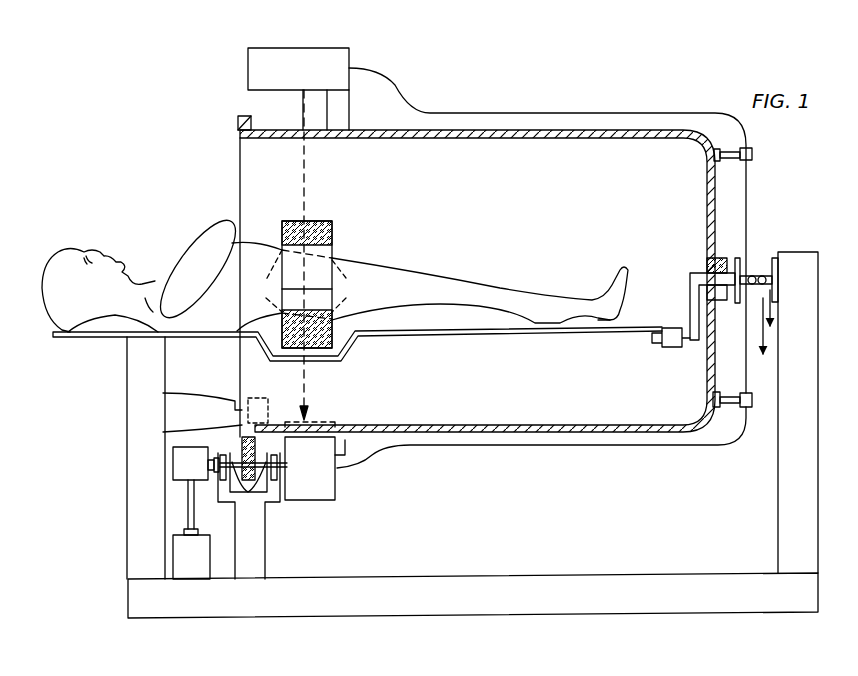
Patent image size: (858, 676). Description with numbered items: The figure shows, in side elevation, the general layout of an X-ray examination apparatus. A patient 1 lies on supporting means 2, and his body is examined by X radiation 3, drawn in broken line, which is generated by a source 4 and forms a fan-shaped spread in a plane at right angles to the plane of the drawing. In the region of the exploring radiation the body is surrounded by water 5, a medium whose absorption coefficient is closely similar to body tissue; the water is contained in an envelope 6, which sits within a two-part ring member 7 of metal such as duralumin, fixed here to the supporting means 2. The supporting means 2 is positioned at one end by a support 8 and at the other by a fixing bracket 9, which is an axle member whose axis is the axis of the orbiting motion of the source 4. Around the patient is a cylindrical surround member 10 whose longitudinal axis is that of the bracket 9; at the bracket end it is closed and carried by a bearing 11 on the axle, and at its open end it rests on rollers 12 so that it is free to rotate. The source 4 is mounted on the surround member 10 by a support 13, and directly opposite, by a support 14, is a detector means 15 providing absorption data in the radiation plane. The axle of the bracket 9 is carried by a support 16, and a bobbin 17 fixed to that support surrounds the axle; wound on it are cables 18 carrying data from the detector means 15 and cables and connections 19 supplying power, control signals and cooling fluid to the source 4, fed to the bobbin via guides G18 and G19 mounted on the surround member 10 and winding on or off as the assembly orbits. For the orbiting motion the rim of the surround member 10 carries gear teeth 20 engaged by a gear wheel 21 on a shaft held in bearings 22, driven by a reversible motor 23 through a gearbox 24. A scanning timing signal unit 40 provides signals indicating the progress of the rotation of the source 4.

The patient 1 is at (170, 262).
The supporting means 2 is at (92, 340).
The X radiation 3 is at (300, 119).
The source 4 is at (248, 71).
The water 5 is at (334, 280).
The envelope 6 is at (269, 281).
The ring member 7 is at (336, 319).
The support 8 is at (127, 516).
The fixing bracket 9 is at (699, 271).
The surround member 10 is at (472, 139).
The bearing 11 is at (720, 258).
The rollers 12 is at (258, 398).
The support 13 is at (335, 110).
The support 14 is at (340, 466).
The detector means 15 is at (320, 498).
The support 16 is at (780, 488).
The bobbin 17 is at (746, 275).
The cables 18 is at (497, 448).
The cables and connections 19 is at (578, 113).
The gear teeth 20 is at (238, 124).
The gear wheel 21 is at (287, 465).
The bearings 22 is at (268, 494).
The reversible motor 23 is at (180, 549).
The gearbox 24 is at (173, 463).
The scanning timing signal unit 40 is at (178, 432).
The guide G19 is at (752, 155).
The guide G18 is at (752, 410).